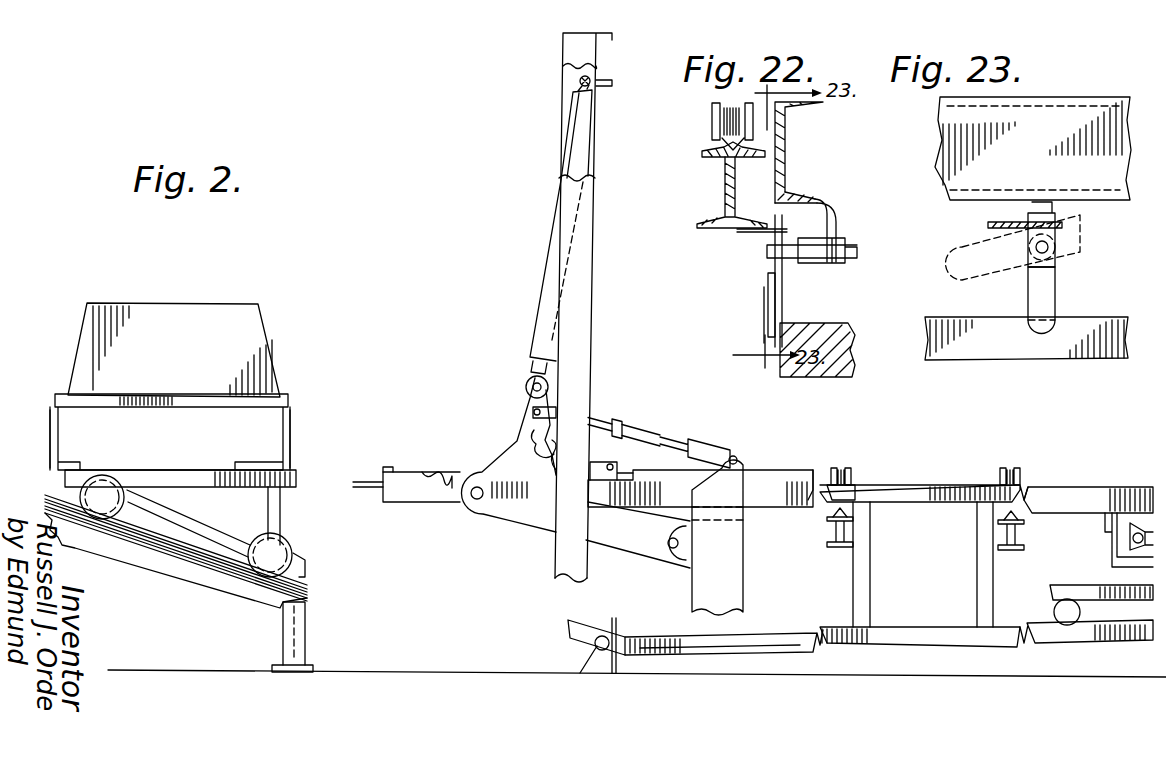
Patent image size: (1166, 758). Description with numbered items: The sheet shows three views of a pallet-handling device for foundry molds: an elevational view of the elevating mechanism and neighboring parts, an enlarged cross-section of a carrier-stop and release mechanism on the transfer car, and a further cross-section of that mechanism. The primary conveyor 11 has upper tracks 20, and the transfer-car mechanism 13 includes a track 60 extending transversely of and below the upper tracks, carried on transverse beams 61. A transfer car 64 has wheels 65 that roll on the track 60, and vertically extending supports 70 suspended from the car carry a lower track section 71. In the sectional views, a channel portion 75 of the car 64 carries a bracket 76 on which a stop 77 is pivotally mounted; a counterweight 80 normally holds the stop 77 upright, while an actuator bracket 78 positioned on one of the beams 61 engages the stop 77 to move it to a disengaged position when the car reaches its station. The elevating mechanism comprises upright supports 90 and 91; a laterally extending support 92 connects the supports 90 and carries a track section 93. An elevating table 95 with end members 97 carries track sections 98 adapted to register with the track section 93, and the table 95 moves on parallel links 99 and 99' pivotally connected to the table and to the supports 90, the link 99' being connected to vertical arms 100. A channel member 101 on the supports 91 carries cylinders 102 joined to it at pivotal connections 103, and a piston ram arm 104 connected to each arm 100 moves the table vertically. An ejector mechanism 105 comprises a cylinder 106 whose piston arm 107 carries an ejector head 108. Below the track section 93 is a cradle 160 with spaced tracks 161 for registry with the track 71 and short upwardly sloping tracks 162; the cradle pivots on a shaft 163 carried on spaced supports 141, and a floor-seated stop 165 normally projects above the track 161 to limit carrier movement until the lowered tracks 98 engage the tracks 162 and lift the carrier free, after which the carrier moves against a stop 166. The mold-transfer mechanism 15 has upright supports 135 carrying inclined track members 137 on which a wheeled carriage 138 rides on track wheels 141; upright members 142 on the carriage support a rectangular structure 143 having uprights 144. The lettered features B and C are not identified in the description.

In FIG. 2, the truck body B is at (256, 352).
In FIG. 2, the container C is at (288, 395).
In FIG. 2, the primary conveyor 11 is at (1082, 485).
In FIG. 2, the transfer-car mechanism 13 is at (930, 482).
In FIG. 2, the mold-transfer mechanism 15 is at (242, 612).
In FIG. 2, the upper tracks 20 is at (1115, 490).
In FIG. 2, the track 60 is at (1020, 522).
In FIG. 22, the track 60 is at (728, 157).
In FIG. 2, the transverse beams 61 is at (855, 535).
In FIG. 22, the transverse beams 61 is at (705, 228).
In FIG. 22, the transfer car 64 is at (845, 172).
In FIG. 23, the transfer car 64 is at (1138, 178).
In FIG. 2, the wheels 65 is at (850, 472).
In FIG. 22, the wheels 65 is at (712, 125).
In FIG. 2, the vertically extending supports 70 is at (980, 560).
In FIG. 2, the lower track section 71 is at (915, 627).
In FIG. 22, the channel portion 75 is at (786, 160).
In FIG. 23, the channel portion 75 is at (1117, 205).
In FIG. 22, the bracket 76 is at (836, 222).
In FIG. 23, the bracket 76 is at (1048, 202).
In FIG. 22, the stop 77 is at (784, 290).
In FIG. 23, the stop 77 is at (1052, 230).
In FIG. 22, the actuator bracket 78 is at (750, 232).
In FIG. 23, the actuator bracket 78 is at (1013, 222).
In FIG. 22, the counterweight 80 is at (776, 315).
In FIG. 23, the counterweight 80 is at (1052, 293).
In FIG. 2, the upright supports 90 is at (745, 590).
In FIG. 2, the upright supports 91 is at (560, 577).
In FIG. 2, the laterally extending support 92 is at (740, 515).
In FIG. 2, the track section 93 is at (832, 490).
In FIG. 2, the elevating table 95 is at (436, 492).
In FIG. 2, the end members 97 is at (400, 495).
In FIG. 2, the track sections 98 is at (438, 470).
In FIG. 2, the parallel link 99 is at (638, 540).
In FIG. 2, the parallel link 99' is at (651, 419).
In FIG. 2, the vertical arms 100 is at (560, 440).
In FIG. 2, the channel member 101 is at (600, 86).
In FIG. 2, the cylinders 102 is at (543, 270).
In FIG. 2, the pivotal connection 103 is at (590, 78).
In FIG. 2, the piston ram arm 104 is at (531, 370).
In FIG. 2, the ejector mechanism 105 is at (528, 392).
In FIG. 2, the cylinder 106 is at (780, 483).
In FIG. 2, the piston arm 107 is at (622, 472).
In FIG. 2, the ejector head 108 is at (612, 465).
In FIG. 2, the upright supports 135 is at (305, 650).
In FIG. 2, the track members 137 is at (308, 590).
In FIG. 2, the wheeled carriage 138 is at (304, 547).
In FIG. 2, the track wheels 141 is at (105, 520).
In FIG. 2, the upright members 142 is at (280, 515).
In FIG. 2, the rectangular structure 143 is at (296, 478).
In FIG. 2, the uprights 144 is at (57, 440).
In FIG. 2, the cradle 160 is at (708, 662).
In FIG. 2, the spaced tracks 161 is at (755, 633).
In FIG. 2, the short tracks 162 is at (580, 625).
In FIG. 2, the shaft 163 is at (595, 645).
In FIG. 2, the stop 165 is at (617, 670).
In FIG. 2, the stop 166 is at (386, 467).